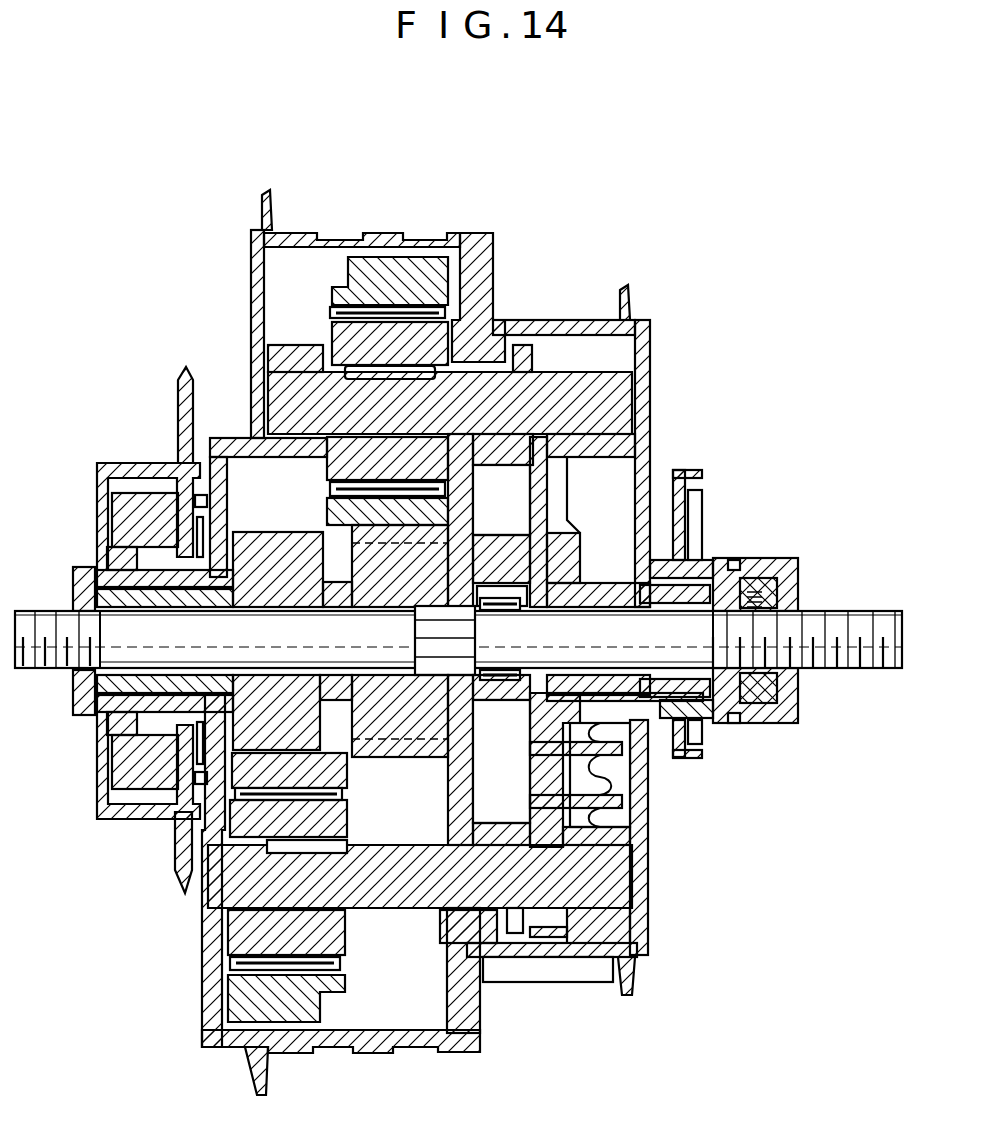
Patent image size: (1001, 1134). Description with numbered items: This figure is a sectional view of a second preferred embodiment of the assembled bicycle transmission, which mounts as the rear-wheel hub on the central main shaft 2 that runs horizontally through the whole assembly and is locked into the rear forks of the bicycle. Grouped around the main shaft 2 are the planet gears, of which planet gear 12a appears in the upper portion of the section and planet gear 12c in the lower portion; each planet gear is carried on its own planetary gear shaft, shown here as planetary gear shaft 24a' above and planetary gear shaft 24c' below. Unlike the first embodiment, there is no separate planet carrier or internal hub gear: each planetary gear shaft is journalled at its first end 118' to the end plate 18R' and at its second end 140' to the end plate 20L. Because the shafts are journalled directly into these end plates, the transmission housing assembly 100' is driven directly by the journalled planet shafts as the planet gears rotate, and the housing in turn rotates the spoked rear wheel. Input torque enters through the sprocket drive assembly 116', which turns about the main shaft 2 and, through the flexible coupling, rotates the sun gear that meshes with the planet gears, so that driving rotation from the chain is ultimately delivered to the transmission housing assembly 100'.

The main shaft 2 is at (868, 614).
The planet gear 12a is at (379, 275).
The planet gear 12c is at (247, 988).
The end plate 18R' is at (218, 334).
The end plate 20L is at (638, 350).
The planetary gear shaft 24a' is at (627, 501).
The planetary gear shaft 24c' is at (580, 835).
The transmission housing assembly 100' is at (446, 235).
The sprocket drive assembly 116' is at (315, 382).
The first end of planetary gear shaft 118' is at (291, 870).
The second end of planetary gear shaft 140' is at (585, 626).